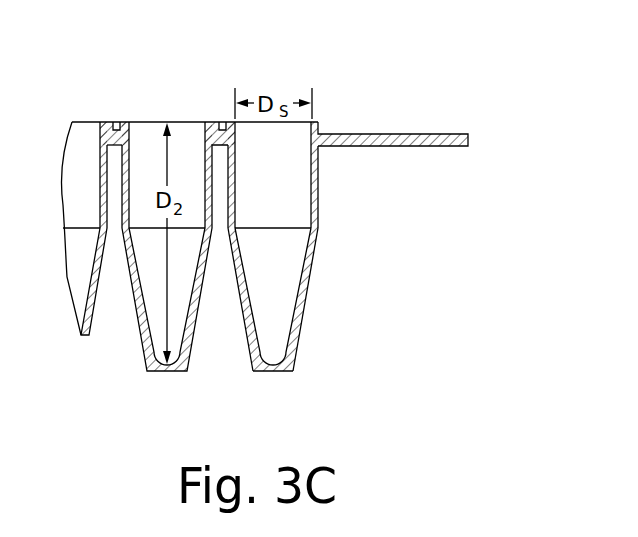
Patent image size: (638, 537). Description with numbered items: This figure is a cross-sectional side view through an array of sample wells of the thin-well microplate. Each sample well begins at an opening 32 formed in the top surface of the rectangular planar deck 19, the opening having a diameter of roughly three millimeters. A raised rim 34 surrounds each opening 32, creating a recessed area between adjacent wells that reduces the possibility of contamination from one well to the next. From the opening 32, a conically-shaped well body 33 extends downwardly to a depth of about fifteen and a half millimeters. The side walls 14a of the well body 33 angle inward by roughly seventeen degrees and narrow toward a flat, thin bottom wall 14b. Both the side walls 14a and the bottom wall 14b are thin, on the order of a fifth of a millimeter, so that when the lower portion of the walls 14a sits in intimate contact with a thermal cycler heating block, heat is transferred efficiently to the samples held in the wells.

The side walls 14a is at (312, 268).
The bottom wall 14b is at (293, 372).
The planar deck 19 is at (393, 133).
The opening 32 is at (158, 121).
The well body 33 is at (318, 204).
The raised rim 34 is at (332, 129).